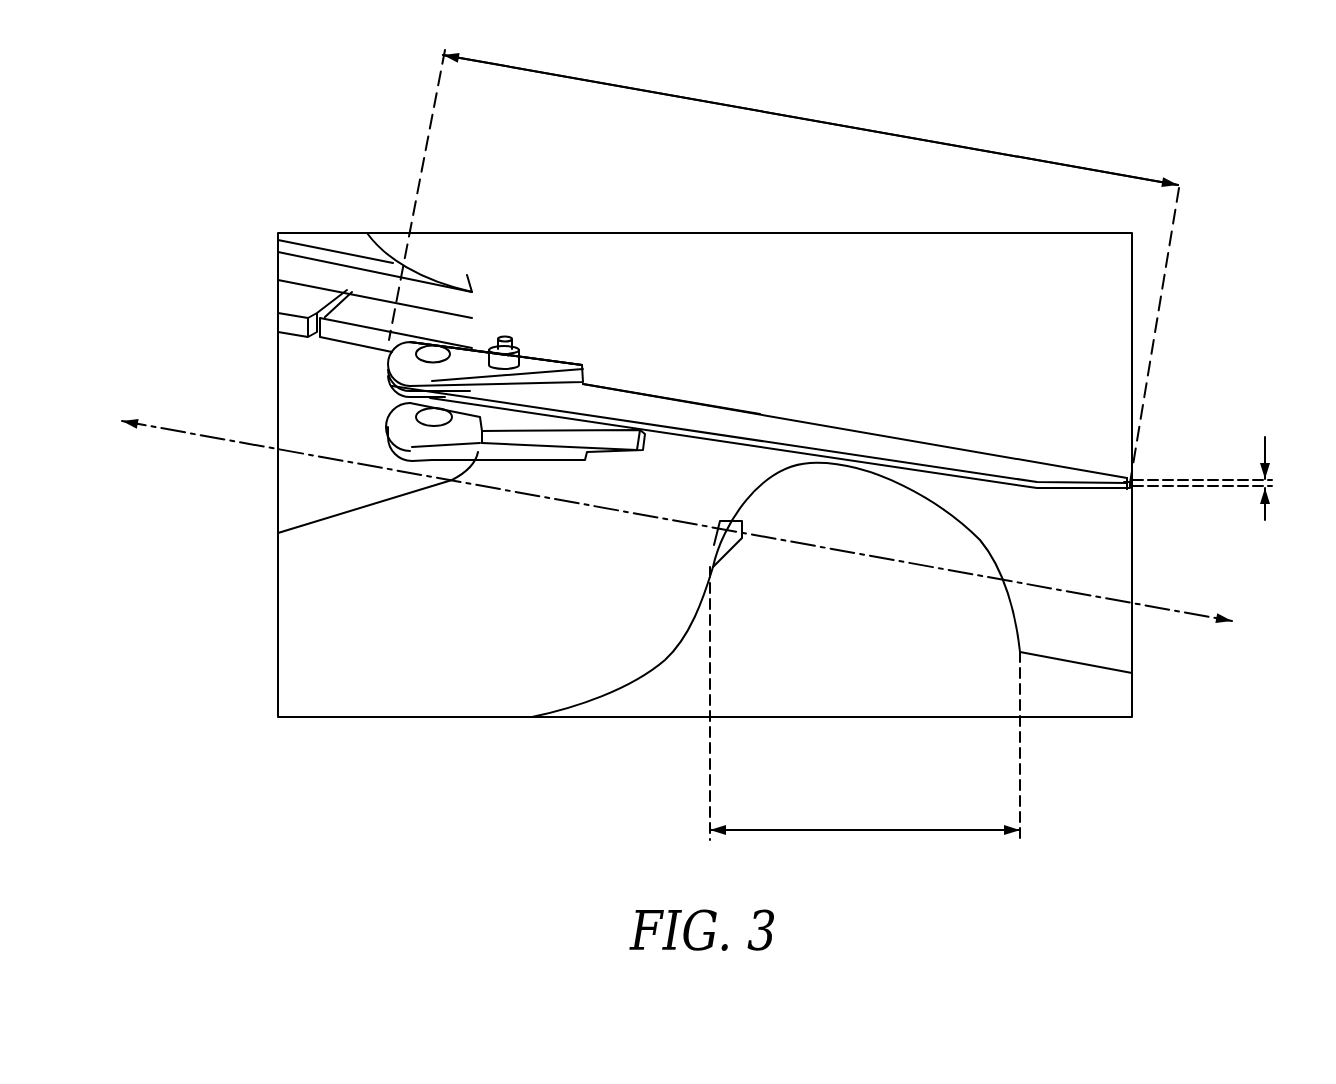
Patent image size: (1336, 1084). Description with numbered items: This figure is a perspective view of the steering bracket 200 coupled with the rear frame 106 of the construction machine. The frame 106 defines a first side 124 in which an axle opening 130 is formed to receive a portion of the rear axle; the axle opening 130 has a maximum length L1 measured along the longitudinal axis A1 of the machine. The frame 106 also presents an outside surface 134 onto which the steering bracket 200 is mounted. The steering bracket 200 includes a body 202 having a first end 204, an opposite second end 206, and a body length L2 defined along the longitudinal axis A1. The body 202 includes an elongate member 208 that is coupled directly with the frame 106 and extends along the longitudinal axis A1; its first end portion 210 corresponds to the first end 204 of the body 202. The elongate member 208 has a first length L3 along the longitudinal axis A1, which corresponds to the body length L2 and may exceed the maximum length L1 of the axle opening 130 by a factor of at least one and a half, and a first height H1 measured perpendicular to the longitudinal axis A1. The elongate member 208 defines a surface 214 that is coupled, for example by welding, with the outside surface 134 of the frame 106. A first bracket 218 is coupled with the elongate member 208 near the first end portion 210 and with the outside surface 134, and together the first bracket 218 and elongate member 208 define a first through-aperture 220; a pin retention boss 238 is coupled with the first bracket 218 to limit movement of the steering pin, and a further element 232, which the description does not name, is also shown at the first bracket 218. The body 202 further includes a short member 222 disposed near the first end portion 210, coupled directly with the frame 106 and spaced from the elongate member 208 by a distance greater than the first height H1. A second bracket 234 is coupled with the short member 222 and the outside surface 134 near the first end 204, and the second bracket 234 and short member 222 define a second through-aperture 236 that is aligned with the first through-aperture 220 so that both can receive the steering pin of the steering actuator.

The rear frame 106 is at (1064, 692).
The first side 124 is at (590, 690).
The axle opening 130 is at (848, 510).
The outside surface 134 is at (1072, 280).
The steering bracket 200 is at (773, 385).
The body 202 is at (367, 430).
The first end 204 is at (367, 370).
The second end 206 is at (1150, 466).
The elongate member 208 is at (624, 407).
The first end portion 210 is at (496, 353).
The surface 214 is at (868, 422).
The first bracket 218 is at (470, 370).
The first through-aperture 220 is at (433, 333).
The short member 222 is at (418, 410).
The fastener 232 is at (522, 346).
The second bracket 234 is at (428, 455).
The second through-aperture 236 is at (387, 392).
The pin retention boss 238 is at (538, 425).
The longitudinal axis A1 is at (160, 427).
The first height H1 is at (1266, 452).
The maximum length L1 is at (865, 715).
The body length L2 is at (818, 120).
The first length L3 is at (810, 120).